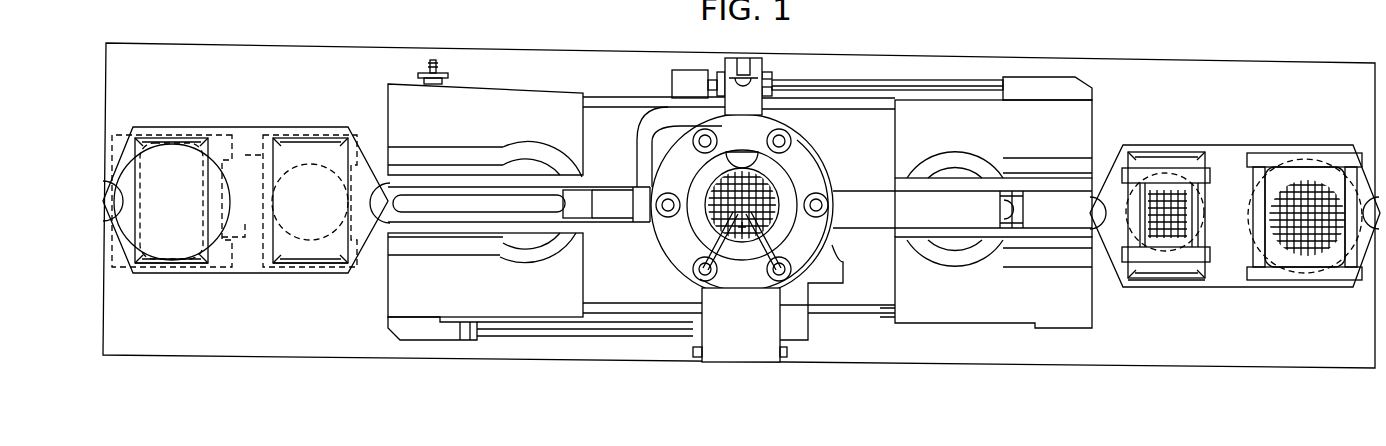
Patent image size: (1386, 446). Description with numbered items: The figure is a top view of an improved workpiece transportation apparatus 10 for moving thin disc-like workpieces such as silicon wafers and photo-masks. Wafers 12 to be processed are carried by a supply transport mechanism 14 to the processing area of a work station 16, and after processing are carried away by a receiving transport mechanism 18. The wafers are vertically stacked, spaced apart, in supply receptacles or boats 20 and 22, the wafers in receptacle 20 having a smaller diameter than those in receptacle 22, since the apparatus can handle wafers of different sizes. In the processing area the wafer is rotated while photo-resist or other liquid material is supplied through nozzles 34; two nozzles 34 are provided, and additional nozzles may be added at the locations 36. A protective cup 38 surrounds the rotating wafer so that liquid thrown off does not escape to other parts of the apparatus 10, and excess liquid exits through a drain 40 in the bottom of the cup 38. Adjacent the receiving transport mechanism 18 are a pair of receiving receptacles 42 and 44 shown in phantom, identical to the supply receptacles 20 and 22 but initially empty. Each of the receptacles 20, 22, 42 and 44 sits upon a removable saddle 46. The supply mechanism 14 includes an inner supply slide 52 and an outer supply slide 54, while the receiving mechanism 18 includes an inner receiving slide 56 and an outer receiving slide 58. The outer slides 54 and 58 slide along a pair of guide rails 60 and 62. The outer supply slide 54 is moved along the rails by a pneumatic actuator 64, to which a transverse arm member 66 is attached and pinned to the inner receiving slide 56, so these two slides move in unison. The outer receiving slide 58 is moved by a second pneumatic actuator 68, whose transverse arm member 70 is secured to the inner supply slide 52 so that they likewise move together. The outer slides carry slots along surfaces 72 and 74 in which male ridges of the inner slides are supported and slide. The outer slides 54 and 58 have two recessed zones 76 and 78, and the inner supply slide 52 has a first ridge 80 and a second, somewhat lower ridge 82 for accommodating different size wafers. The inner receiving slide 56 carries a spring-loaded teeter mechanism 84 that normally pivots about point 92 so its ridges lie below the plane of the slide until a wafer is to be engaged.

The workpiece transportation apparatus 10 is at (1206, 350).
The wafer 12 is at (1243, 222).
The supply transport mechanism 14 is at (1106, 113).
The work station 16 is at (828, 154).
The receiving transport mechanism 18 is at (380, 100).
The supply receptacle 20 is at (1210, 250).
The supply receptacle 22 is at (1246, 154).
The nozzles 34 is at (710, 250).
The locations 36 is at (701, 151).
The protective cup 38 is at (680, 280).
The drain 40 is at (743, 152).
The receiving receptacle 42 is at (187, 201).
The receiving receptacle 44 is at (296, 201).
The removable saddle 46 is at (273, 257).
The inner supply slide 52 is at (876, 228).
The outer supply slide 54 is at (1000, 323).
The inner receiving slide 56 is at (627, 222).
The outer receiving slide 58 is at (388, 300).
The guide rail 60 is at (609, 97).
The guide rail 62 is at (622, 290).
The pneumatic actuator 64 is at (852, 80).
The transverse arm member 66 is at (638, 140).
The second pneumatic actuator 68 is at (578, 338).
The transverse arm member 70 is at (838, 290).
The slotted surface 72 is at (458, 187).
The slotted surface 74 is at (450, 222).
The recessed zone 76 is at (530, 255).
The recessed zone 78 is at (520, 237).
The first ridge 80 is at (1000, 221).
The second ridge 82 is at (1000, 206).
The teeter mechanism 84 is at (585, 190).
The pivot point 92 is at (525, 203).